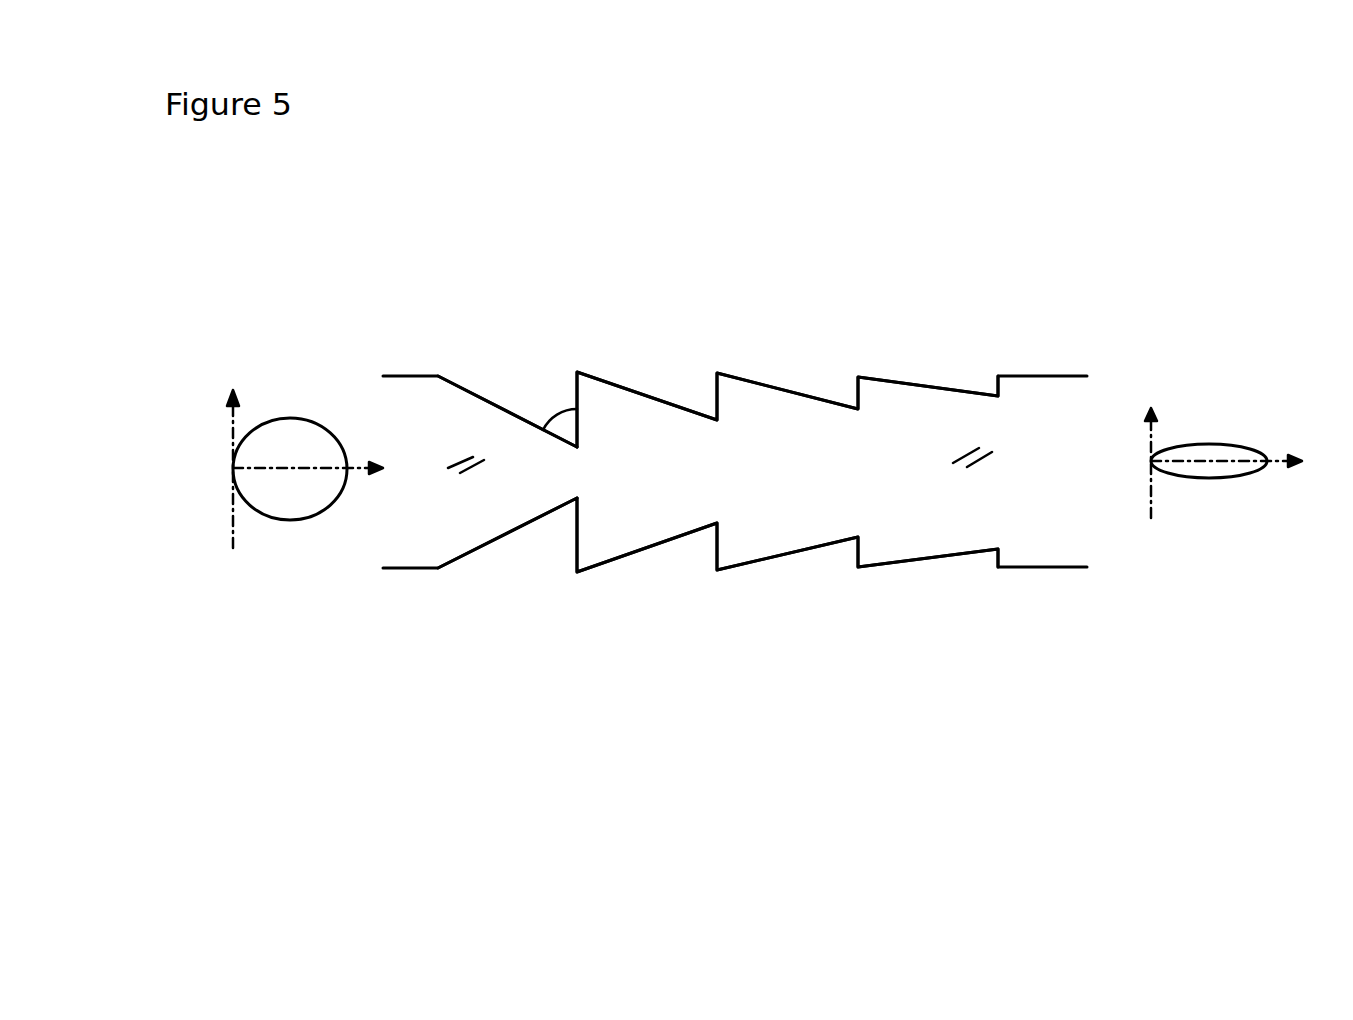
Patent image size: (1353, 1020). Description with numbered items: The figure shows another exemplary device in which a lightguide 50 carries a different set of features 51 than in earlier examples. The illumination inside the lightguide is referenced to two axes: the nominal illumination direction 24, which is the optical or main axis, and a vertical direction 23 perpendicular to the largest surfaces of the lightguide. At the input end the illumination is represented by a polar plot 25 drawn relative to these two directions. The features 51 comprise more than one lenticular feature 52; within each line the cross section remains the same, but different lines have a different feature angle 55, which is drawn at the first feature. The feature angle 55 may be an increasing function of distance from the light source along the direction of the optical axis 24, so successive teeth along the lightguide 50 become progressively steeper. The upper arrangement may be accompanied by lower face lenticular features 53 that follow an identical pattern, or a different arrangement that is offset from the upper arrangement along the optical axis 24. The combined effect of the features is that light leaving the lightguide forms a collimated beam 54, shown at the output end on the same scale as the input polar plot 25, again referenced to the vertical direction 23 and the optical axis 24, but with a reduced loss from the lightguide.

The vertical direction 23 is at (232, 528).
The nominal illumination direction 24 is at (367, 470).
The polar plot 25 is at (293, 522).
The lightguide 50 is at (1063, 372).
The set of features 51 is at (1005, 702).
The lenticular feature 52 is at (493, 402).
The lower face lenticular features 53 is at (515, 532).
The collimated beam 54 is at (1223, 478).
The feature angle 55 is at (570, 423).